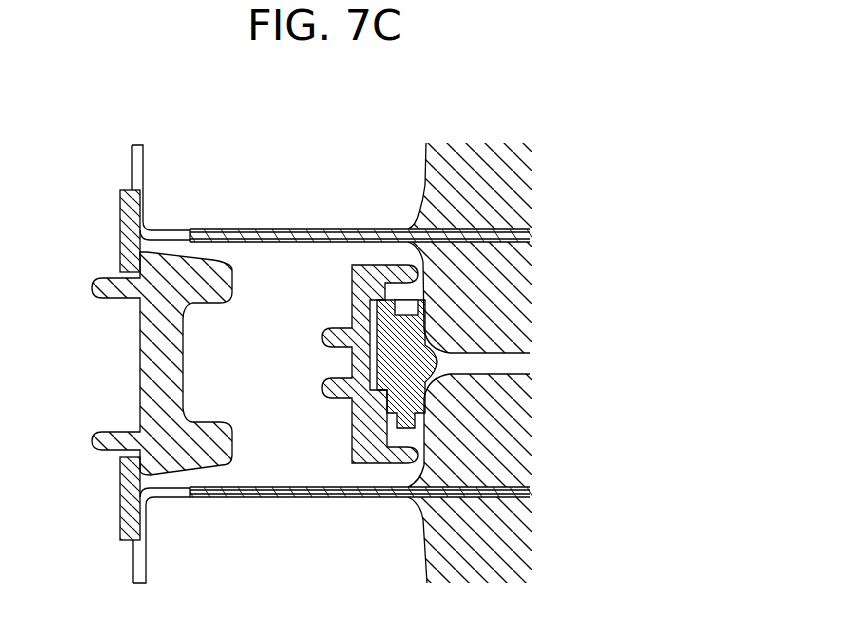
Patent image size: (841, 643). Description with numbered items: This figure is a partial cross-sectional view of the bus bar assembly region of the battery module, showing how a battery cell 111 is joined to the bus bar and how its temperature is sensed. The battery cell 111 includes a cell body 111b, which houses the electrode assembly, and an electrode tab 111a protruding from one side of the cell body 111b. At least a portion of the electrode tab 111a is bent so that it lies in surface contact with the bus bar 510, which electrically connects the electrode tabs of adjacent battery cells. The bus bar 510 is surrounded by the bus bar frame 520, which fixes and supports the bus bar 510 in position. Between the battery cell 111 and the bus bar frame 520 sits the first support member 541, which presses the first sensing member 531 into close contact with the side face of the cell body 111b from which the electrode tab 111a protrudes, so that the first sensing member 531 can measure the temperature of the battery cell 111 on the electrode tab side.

The battery cell 111 is at (387, 150).
The electrode tab 111a is at (176, 226).
The cell body 111b is at (424, 192).
The bus bar 510 is at (130, 233).
The bus bar frame 520 is at (138, 364).
The first sensing member 531 is at (427, 387).
The first support member 541 is at (427, 299).